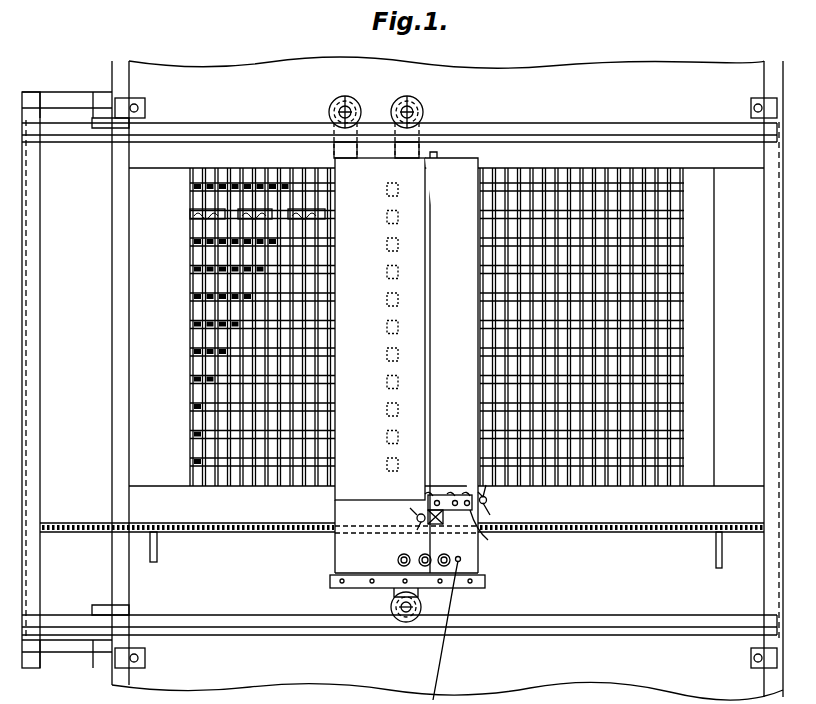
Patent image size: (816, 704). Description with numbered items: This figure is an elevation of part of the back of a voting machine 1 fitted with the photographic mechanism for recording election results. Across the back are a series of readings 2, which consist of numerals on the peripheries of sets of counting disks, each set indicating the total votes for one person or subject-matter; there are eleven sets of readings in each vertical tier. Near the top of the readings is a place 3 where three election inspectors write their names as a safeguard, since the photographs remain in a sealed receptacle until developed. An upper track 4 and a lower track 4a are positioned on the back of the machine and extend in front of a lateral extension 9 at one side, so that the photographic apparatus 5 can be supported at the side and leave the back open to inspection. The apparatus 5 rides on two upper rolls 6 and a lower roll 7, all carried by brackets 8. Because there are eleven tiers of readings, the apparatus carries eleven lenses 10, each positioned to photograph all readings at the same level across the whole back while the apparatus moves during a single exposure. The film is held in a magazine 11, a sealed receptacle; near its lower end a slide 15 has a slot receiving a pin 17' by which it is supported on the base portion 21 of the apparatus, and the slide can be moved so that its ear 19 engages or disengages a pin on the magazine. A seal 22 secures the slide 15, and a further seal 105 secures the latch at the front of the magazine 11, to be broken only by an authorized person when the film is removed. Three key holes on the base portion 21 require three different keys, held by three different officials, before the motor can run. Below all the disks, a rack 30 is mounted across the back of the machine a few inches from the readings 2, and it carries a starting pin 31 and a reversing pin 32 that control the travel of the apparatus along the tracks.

The back of the voting machine 1 is at (546, 70).
The readings 2 is at (182, 280).
The names of inspectors 3 is at (190, 213).
The upper track 4 is at (237, 129).
The lower track 4a is at (230, 620).
The photographic apparatus 5 is at (345, 490).
The upper rolls 6 is at (420, 100).
The lower roll 7 is at (391, 605).
The brackets 8 is at (411, 148).
The lateral extension 9 is at (402, 379).
The lenses 10 is at (383, 183).
The magazine 11 is at (464, 168).
The slide 15 is at (450, 516).
The pin 17' is at (494, 533).
The ear 19 is at (473, 495).
The base portion 21 is at (345, 552).
The seal 22 is at (417, 518).
The rack 30 is at (603, 535).
The starting pin 31 is at (157, 548).
The reversing pin 32 is at (713, 540).
The seal 105 is at (493, 507).